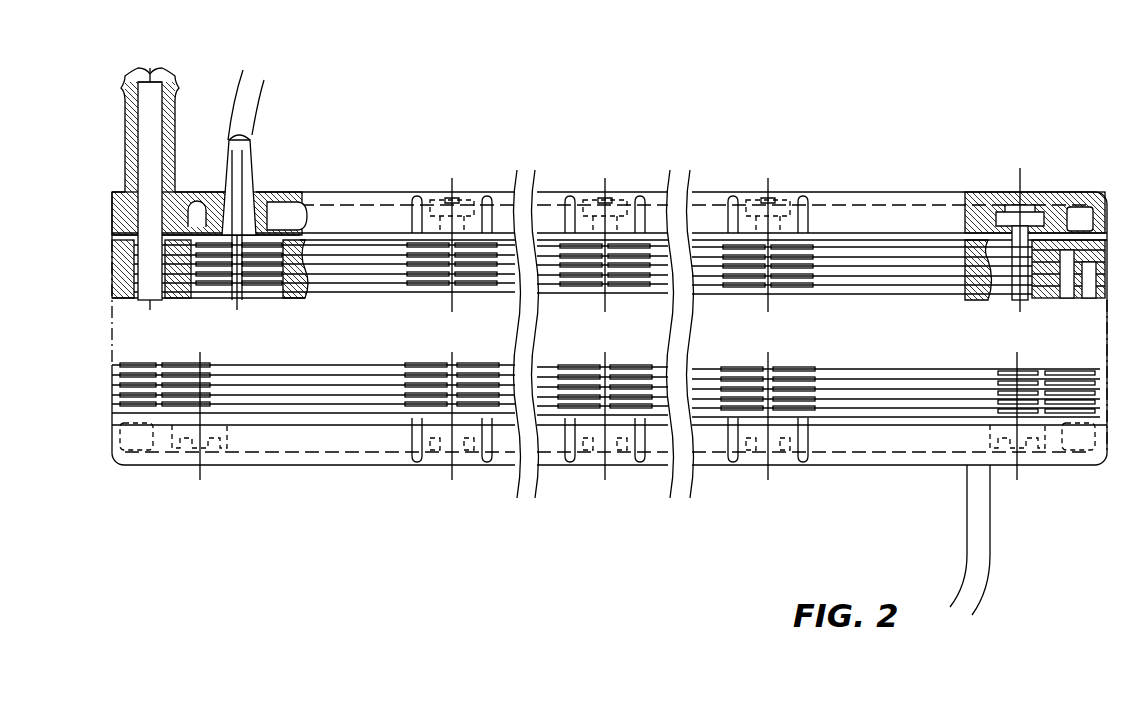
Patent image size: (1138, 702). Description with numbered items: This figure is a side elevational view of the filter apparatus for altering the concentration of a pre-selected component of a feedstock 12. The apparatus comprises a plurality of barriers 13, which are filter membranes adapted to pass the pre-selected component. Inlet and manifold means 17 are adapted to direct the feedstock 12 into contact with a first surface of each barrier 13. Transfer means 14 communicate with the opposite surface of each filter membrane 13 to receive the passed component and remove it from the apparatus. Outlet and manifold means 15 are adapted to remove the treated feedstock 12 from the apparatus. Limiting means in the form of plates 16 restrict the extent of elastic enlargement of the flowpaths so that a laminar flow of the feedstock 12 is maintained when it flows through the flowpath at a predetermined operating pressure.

The feedstock 12 is at (962, 603).
The barriers 13 is at (403, 243).
The transfer means 14 is at (178, 237).
The outlet and manifold means 15 is at (256, 240).
The plates 16 is at (917, 273).
The inlet and manifold means 17 is at (966, 478).